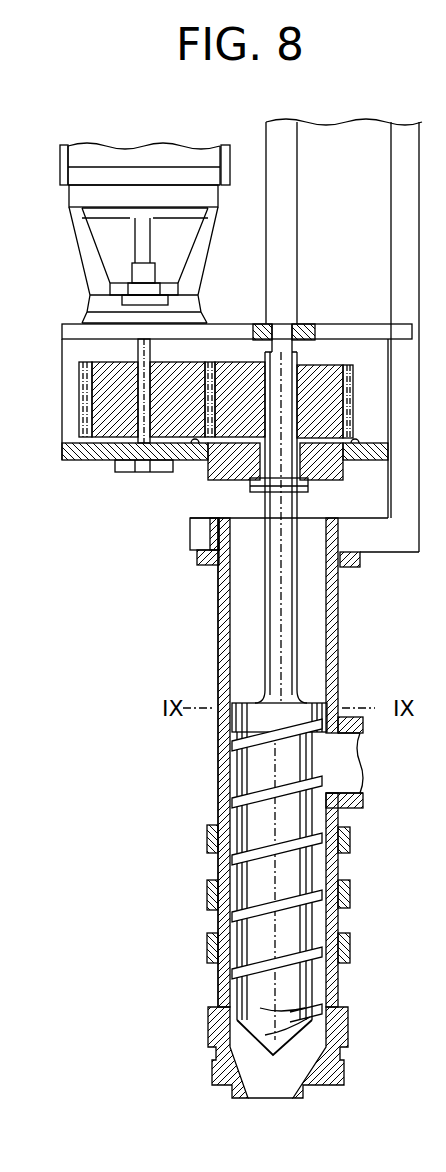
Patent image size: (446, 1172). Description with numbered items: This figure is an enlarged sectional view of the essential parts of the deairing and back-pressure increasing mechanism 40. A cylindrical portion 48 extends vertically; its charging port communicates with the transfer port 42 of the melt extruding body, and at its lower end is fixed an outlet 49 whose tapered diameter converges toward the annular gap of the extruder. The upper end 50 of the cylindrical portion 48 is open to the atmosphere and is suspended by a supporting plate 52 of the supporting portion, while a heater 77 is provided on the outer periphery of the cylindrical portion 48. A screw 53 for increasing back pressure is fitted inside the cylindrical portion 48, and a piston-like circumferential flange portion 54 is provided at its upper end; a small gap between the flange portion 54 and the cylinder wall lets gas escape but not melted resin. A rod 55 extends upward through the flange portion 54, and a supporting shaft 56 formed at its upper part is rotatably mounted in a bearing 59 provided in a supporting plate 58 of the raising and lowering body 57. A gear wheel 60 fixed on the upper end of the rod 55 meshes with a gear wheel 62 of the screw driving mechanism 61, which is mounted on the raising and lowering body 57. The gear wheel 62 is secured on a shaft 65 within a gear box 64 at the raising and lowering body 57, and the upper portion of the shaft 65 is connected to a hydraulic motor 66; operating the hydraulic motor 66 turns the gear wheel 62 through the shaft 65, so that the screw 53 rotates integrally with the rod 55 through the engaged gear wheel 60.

The deairing and back-pressure increasing mechanism 40 is at (215, 587).
The transfer port 42 is at (363, 748).
The cylindrical portion 48 is at (222, 625).
The outlet 49 is at (212, 1073).
The upper end 50 is at (247, 527).
The supporting plate 52 is at (80, 457).
The screw 53 is at (257, 905).
The circumferential flange portion 54 is at (248, 720).
The rod 55 is at (287, 635).
The supporting shaft 56 is at (287, 470).
The raising and lowering body 57 is at (60, 362).
The supporting plate 58 is at (335, 448).
The bearing 59 is at (260, 463).
The gear wheel 60 is at (320, 373).
The screw driving mechanism 61 is at (75, 270).
The gear wheel 62 is at (102, 397).
The gear box 64 is at (73, 428).
The shaft 65 is at (152, 350).
The hydraulic motor 66 is at (107, 153).
The heater 77 is at (207, 837).